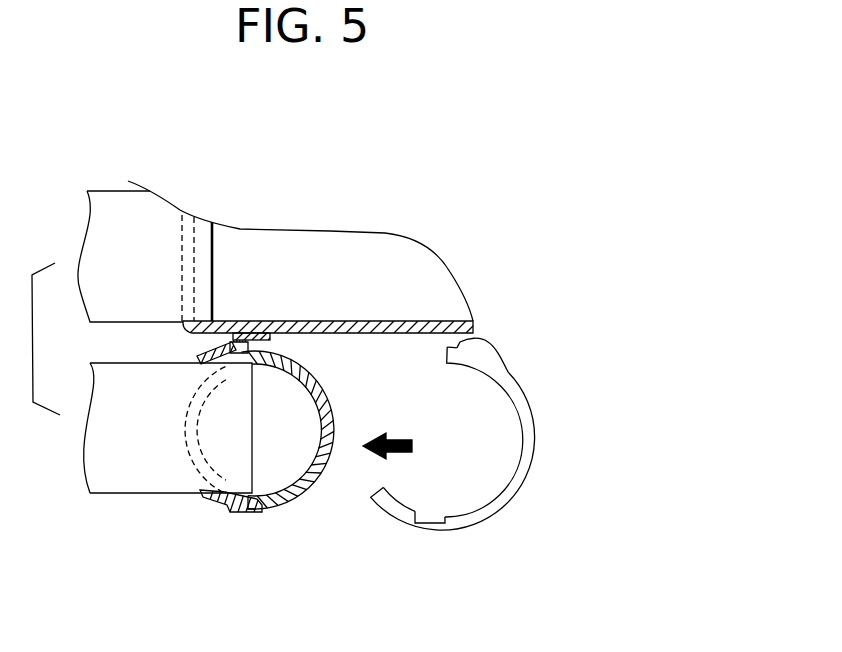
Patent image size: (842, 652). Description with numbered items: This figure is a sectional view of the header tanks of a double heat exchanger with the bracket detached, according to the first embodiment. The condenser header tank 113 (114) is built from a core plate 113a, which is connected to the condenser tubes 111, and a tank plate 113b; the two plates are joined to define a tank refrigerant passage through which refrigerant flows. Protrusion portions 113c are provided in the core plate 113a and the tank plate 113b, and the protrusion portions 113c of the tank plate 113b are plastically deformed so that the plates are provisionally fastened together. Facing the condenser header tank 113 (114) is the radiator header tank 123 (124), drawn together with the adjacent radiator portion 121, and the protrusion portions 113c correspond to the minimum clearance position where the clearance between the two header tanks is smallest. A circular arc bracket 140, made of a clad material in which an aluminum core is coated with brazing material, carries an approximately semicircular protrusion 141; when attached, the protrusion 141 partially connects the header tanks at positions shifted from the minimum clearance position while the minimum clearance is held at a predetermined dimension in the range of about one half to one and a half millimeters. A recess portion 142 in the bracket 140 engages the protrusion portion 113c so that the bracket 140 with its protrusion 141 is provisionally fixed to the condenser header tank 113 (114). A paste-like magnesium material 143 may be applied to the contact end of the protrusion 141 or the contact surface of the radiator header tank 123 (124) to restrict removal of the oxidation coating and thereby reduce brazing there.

The upper housing body 121 is at (118, 217).
The radiator header tank 123 is at (393, 334).
The radiator header tank 124 is at (330, 361).
The paste-like magnesium material 143 is at (270, 333).
The condenser tubes 111 is at (110, 494).
The condenser header tank 113 is at (322, 484).
The condenser header tank 114 is at (317, 456).
The core plate 113a is at (187, 463).
The tank plate 113b is at (280, 509).
The protrusion portions 113c is at (205, 352).
The circular arc bracket 140 is at (473, 530).
The protrusion 141 is at (493, 350).
The recess portion 142 is at (427, 524).